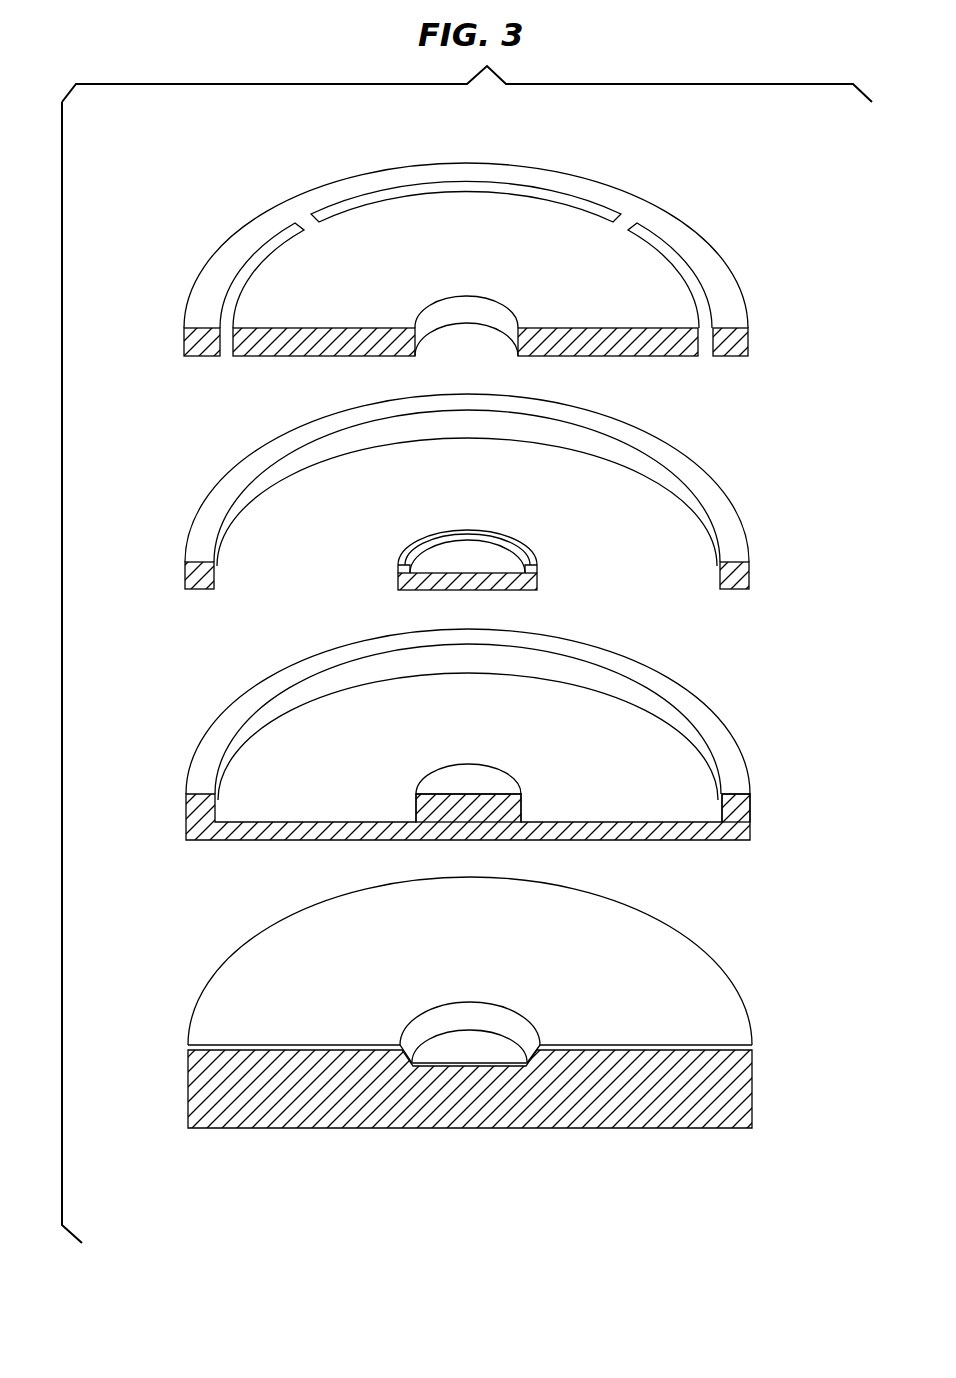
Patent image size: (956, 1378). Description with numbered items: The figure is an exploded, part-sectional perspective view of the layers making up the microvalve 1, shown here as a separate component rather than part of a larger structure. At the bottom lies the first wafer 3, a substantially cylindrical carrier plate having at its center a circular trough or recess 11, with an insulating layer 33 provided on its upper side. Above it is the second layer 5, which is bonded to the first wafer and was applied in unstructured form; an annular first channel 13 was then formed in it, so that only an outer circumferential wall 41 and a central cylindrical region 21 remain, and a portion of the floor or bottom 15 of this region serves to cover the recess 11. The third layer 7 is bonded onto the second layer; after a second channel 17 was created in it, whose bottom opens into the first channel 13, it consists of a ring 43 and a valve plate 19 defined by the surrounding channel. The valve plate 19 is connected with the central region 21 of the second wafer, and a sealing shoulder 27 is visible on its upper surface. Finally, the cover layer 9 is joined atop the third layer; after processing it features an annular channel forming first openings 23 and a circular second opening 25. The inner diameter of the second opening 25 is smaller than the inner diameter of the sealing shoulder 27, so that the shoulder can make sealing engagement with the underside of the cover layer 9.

The microvalve 1 is at (706, 199).
The first wafer 3 is at (198, 1098).
The second layer 5 is at (166, 820).
The third layer 7 is at (166, 572).
The cover layer 9 is at (166, 341).
The recess 11 is at (493, 1052).
The first channel 13 is at (334, 788).
The bottom 15 is at (252, 840).
The second channel 17 is at (642, 562).
The valve plate 19 is at (530, 578).
The central cylindrical region 21 is at (500, 825).
The first openings 23 is at (703, 308).
The second opening 25 is at (492, 312).
The sealing shoulder 27 is at (522, 548).
The insulating layer 33 is at (730, 1013).
The outer circumferential wall 41 is at (749, 815).
The ring 43 is at (741, 577).